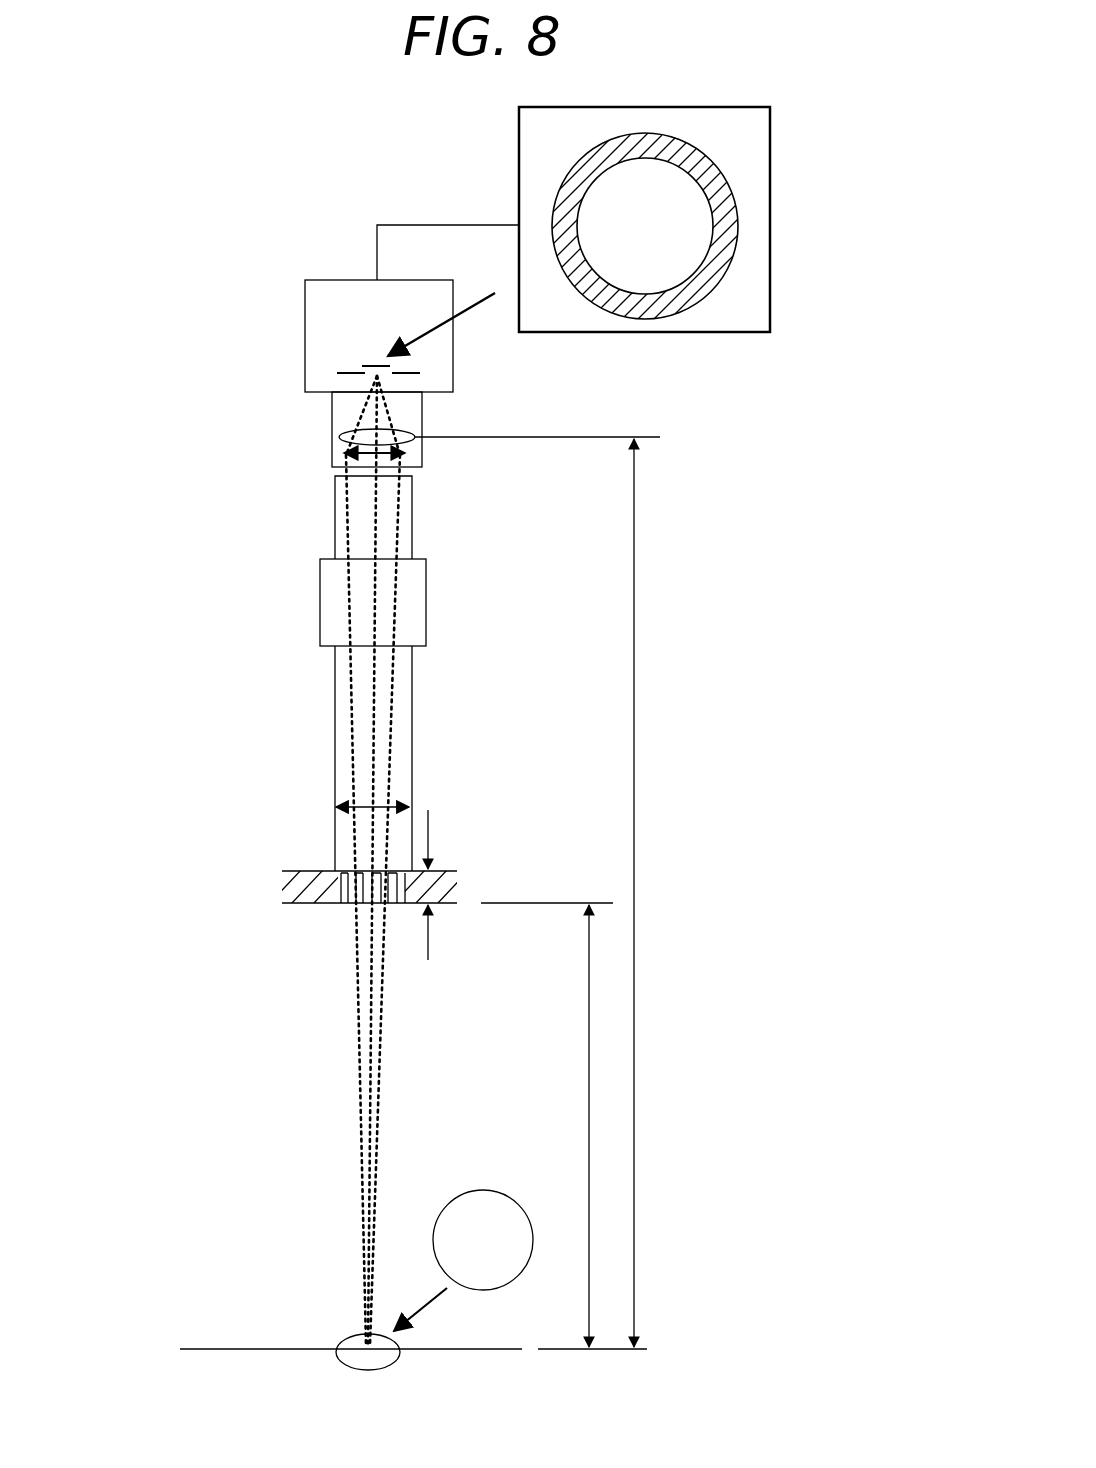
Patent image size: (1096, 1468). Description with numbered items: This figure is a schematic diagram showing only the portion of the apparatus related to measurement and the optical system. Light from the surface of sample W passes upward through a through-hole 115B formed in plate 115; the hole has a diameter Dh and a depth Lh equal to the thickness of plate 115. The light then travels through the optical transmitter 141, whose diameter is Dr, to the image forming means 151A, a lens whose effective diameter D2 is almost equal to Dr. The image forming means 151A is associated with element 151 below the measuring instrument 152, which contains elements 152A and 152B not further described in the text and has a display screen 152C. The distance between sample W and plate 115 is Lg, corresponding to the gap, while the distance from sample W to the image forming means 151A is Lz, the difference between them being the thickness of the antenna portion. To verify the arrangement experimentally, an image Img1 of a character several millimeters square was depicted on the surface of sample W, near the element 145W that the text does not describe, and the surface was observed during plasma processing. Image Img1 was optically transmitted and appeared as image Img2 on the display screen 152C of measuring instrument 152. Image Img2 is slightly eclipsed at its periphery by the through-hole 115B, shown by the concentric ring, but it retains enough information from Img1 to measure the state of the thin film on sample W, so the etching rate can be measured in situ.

The measuring instrument 152 is at (323, 317).
The image pickup surface 152A is at (375, 365).
The aperture 152B is at (347, 373).
The display screen 152C is at (542, 335).
The lens unit 151 is at (332, 455).
The image forming means 151A is at (353, 432).
The optical transmitter 141 is at (342, 708).
The plate 115 is at (308, 895).
The through-hole 115B is at (342, 908).
The measurement spot 145W is at (348, 1333).
The sample W is at (288, 1343).
The effective diameter of image forming means D2 is at (403, 473).
The diameter of optical transmitter Dr is at (383, 802).
The depth of through-hole Lh is at (433, 867).
The diameter of through-hole Dh is at (395, 910).
The distance from sample to image forming means Lz is at (537, 892).
The distance between sample and plate Lg is at (547, 1125).
The image Img1 is at (482, 1190).
The image Img2 is at (682, 307).